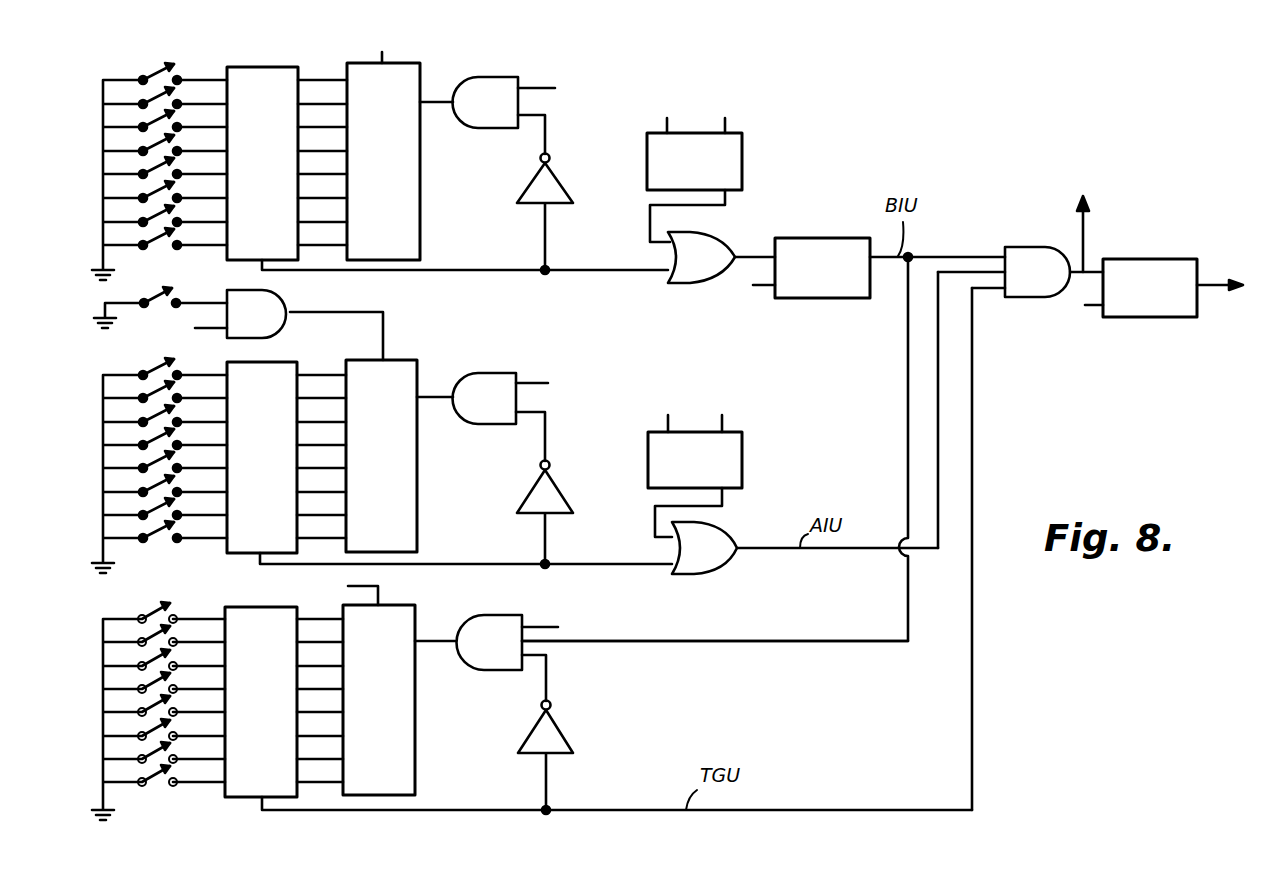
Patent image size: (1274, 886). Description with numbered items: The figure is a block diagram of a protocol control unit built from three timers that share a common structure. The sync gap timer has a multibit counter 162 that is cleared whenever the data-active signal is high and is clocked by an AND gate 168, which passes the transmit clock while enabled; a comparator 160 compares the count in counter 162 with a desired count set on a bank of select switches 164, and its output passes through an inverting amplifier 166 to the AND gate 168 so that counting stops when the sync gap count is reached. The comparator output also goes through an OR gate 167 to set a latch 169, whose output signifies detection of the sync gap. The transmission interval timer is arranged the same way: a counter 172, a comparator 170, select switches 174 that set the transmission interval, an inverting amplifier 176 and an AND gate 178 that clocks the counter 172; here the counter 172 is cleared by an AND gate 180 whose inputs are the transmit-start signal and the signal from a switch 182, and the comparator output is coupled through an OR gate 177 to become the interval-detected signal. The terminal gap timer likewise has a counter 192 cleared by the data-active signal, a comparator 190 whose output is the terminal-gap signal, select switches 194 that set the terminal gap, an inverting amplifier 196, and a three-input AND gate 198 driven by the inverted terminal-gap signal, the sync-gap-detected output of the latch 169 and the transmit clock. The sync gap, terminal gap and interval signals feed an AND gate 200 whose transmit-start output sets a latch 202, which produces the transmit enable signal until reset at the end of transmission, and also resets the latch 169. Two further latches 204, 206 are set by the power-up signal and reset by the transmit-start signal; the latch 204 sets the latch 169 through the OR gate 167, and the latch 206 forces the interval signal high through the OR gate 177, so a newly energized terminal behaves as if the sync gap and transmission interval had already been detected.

The comparator 160 is at (250, 67).
The counter 162 is at (410, 63).
The select switches 164 is at (157, 69).
The inverting amplifier 166 is at (556, 184).
The OR gate 167 is at (670, 286).
The AND gate 168 is at (500, 77).
The latch 169 is at (820, 238).
The comparator 170 is at (282, 362).
The counter 172 is at (400, 360).
The select switches 174 is at (157, 366).
The inverting amplifier 176 is at (560, 497).
The OR gate 177 is at (688, 576).
The AND gate 178 is at (490, 373).
The AND gate 180 is at (292, 308).
The switch 182 is at (166, 292).
The comparator 190 is at (270, 592).
The counter 192 is at (410, 605).
The select switches 194 is at (163, 578).
The inverting amplifier 196 is at (565, 735).
The AND gate 198 is at (490, 615).
The AND gate 200 is at (1018, 246).
The latch 202 is at (1160, 259).
The latch 204 is at (745, 168).
The latch 206 is at (745, 460).